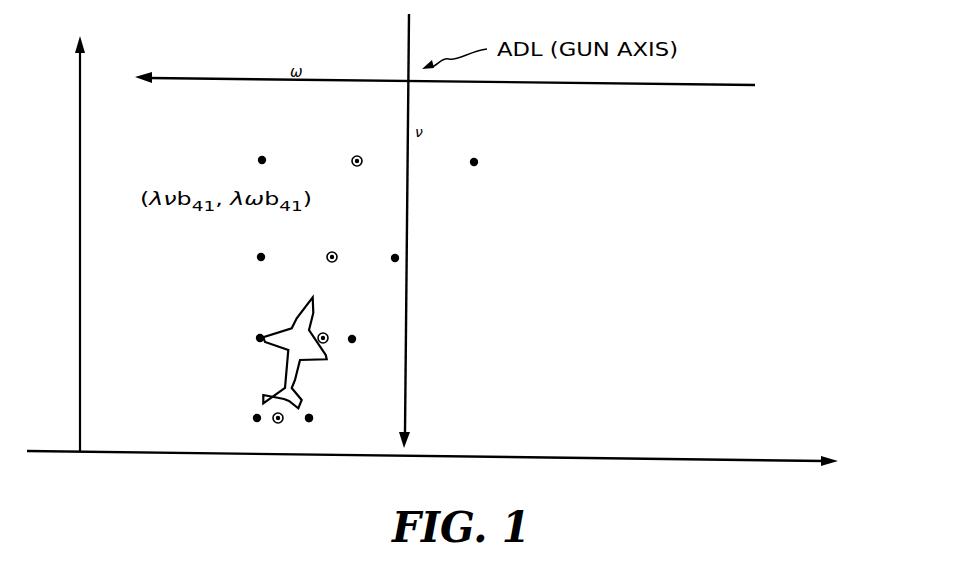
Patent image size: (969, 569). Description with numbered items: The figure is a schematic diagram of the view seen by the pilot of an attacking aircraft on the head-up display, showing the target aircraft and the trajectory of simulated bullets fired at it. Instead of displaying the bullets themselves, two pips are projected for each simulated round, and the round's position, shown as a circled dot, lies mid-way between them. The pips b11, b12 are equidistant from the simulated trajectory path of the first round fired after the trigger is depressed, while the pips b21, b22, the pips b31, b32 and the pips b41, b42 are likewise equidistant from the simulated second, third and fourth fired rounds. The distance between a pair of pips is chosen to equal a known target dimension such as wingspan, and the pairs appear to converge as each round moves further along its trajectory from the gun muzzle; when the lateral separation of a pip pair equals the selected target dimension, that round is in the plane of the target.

The pip b41 is at (239, 156).
The pip b42 is at (503, 160).
The pip b31 is at (244, 256).
The pip b32 is at (427, 261).
The pip b21 is at (242, 336).
The pip b22 is at (372, 341).
The pip b11 is at (242, 417).
The pip b12 is at (339, 419).